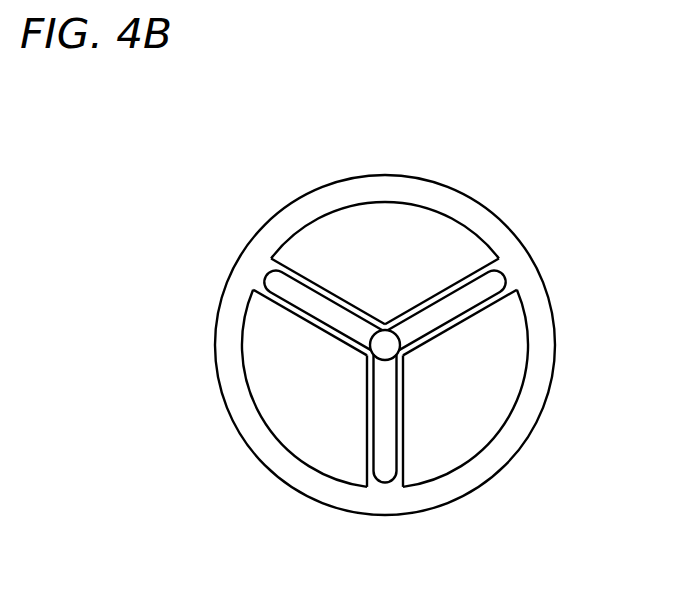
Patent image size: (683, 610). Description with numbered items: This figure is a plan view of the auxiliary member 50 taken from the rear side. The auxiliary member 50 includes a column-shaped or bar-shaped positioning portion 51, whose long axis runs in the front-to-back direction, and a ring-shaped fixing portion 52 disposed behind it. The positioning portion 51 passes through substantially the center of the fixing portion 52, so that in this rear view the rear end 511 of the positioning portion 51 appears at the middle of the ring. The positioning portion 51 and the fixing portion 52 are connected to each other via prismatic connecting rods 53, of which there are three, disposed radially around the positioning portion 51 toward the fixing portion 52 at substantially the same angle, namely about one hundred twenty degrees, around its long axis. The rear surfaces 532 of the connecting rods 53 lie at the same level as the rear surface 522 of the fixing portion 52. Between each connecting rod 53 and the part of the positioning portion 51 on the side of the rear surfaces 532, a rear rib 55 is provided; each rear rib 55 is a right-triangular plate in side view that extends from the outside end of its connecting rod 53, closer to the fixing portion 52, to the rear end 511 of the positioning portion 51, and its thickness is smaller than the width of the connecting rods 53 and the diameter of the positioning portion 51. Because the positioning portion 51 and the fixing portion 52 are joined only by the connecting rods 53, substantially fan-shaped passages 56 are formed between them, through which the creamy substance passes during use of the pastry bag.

The auxiliary member 50 is at (539, 190).
The positioning portion 51 is at (389, 352).
The rear end of the positioning portion 511 is at (392, 348).
The fixing portion 52 is at (345, 177).
The rear surface of the fixing portion 522 is at (303, 210).
The connecting rod 53 is at (270, 300).
The rear surface of the connecting rod 532 is at (500, 259).
The rear rib 55 is at (278, 282).
The passage 56 is at (398, 248).